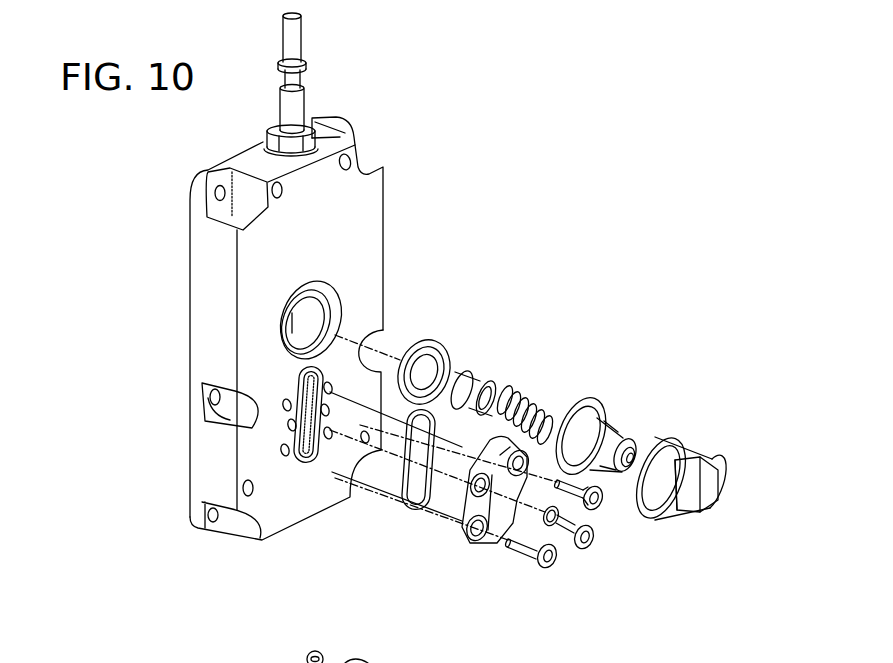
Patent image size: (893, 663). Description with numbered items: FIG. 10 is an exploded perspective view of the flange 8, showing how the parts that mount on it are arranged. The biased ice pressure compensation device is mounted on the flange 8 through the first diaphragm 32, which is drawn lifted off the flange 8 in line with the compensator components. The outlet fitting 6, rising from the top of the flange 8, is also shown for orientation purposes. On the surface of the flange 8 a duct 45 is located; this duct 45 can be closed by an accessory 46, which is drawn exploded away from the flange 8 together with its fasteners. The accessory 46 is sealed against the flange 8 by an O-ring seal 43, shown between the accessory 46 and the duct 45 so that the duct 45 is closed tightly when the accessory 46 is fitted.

The outlet fitting 6 is at (292, 38).
The flange 8 is at (357, 232).
The first diaphragm 32 is at (405, 348).
The O-ring seal 43 is at (413, 505).
The duct 45 is at (350, 462).
The accessory 46 is at (493, 543).